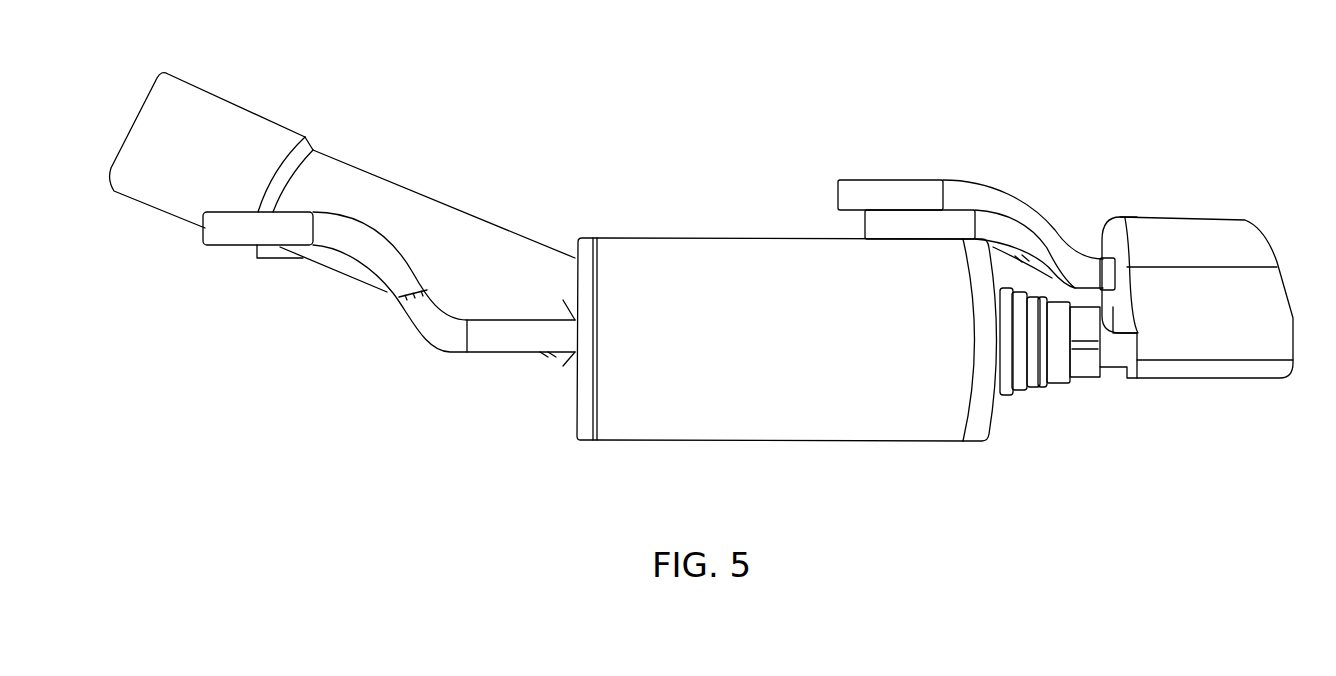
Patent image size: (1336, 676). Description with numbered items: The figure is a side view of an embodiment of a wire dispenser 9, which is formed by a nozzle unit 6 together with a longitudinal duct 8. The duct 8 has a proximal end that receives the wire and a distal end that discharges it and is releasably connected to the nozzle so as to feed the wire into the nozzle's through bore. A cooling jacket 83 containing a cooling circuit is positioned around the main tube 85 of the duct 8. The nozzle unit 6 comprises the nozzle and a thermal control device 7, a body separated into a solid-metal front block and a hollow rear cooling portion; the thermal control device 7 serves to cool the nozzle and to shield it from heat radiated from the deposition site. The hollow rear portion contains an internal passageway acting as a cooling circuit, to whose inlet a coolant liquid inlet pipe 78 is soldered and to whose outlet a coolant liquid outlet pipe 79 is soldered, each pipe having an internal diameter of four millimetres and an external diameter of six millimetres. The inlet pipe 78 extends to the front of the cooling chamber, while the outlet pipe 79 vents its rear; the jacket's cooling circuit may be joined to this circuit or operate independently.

The wire dispenser 9 is at (698, 104).
The main tube 85 is at (327, 177).
The longitudinal duct 8 is at (431, 215).
The cooling jacket 83 is at (653, 405).
The coolant liquid outlet pipe 79 is at (888, 191).
The coolant liquid inlet pipe 78 is at (1042, 238).
The nozzle unit 6 is at (1146, 278).
The thermal control device 7 is at (1220, 334).